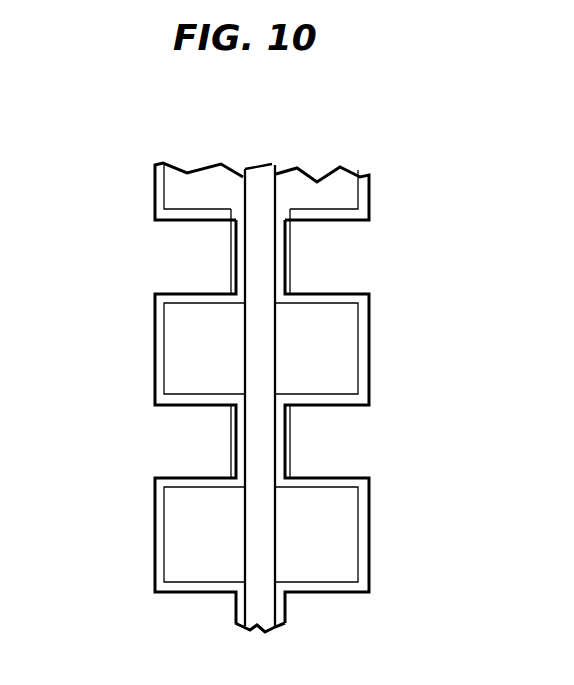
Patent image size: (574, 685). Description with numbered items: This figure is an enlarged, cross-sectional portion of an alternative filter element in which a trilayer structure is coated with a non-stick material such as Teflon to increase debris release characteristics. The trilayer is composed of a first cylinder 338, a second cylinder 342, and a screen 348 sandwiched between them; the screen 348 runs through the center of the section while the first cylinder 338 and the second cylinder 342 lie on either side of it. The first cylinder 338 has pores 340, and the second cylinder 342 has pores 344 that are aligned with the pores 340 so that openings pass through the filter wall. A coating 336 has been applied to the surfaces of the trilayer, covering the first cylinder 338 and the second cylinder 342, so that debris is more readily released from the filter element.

The coating 336 is at (372, 372).
The first cylinder 338 is at (340, 193).
The pores 340 is at (350, 247).
The second cylinder 342 is at (178, 190).
The pores 344 is at (186, 265).
The screen 348 is at (260, 184).